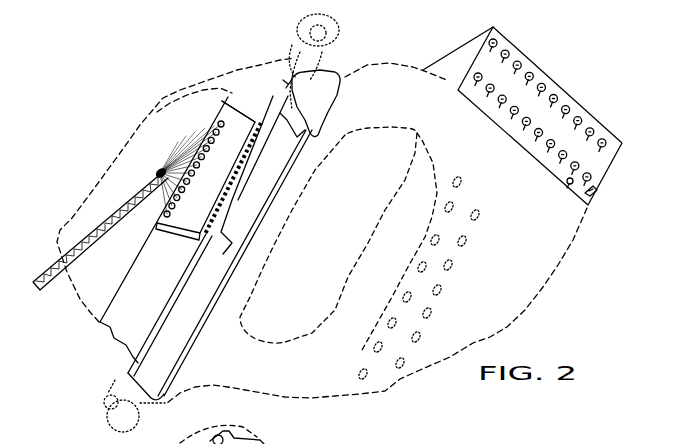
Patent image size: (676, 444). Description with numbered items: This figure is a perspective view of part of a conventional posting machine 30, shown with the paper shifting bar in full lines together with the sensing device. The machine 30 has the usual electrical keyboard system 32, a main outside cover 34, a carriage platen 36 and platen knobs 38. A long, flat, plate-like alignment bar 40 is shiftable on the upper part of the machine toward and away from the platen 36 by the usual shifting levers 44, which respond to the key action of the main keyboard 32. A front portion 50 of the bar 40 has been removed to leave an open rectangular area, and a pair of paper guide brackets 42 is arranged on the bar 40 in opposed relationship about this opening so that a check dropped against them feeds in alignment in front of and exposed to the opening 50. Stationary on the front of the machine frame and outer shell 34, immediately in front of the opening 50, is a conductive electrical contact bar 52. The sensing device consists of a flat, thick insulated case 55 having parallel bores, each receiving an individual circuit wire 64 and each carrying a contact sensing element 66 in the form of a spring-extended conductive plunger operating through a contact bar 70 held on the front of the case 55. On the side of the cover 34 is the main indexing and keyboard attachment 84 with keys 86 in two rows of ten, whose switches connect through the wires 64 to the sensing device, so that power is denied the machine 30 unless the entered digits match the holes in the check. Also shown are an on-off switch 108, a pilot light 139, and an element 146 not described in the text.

The posting machine 30 is at (102, 167).
The electrical keyboard system 32 is at (455, 271).
The main outside cover 34 is at (524, 237).
The carriage platen 36 is at (128, 362).
The platen knobs 38 is at (340, 18).
The alignment bar 40 is at (178, 290).
The paper guide bracket 42 is at (318, 108).
The shifting levers 44 is at (290, 78).
The front portion 50 is at (226, 240).
The conductive electrical contact bar 52 is at (254, 234).
The case 55 is at (205, 170).
The circuit wire 64 is at (132, 222).
The contact sensing element 66 is at (250, 163).
The contact bar 70 is at (257, 125).
The main indexing and keyboard attachment 84 is at (552, 80).
The keys 86 is at (584, 123).
The on-off double pole, double throw switch 108 is at (597, 192).
The pilot light 139 is at (567, 183).
The light emitting diode 146 is at (500, 43).